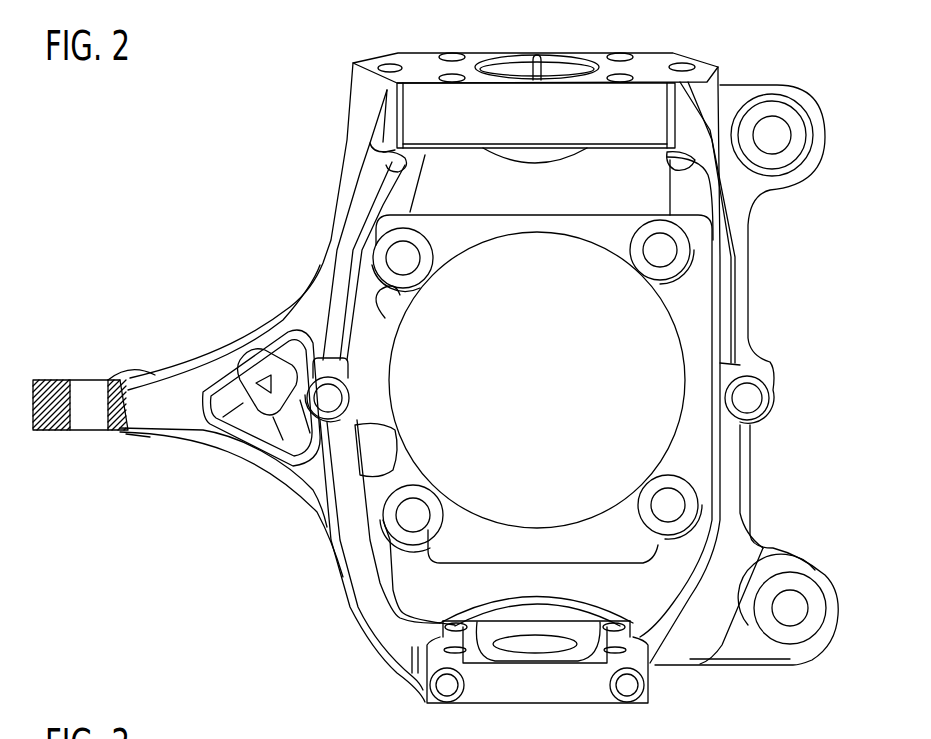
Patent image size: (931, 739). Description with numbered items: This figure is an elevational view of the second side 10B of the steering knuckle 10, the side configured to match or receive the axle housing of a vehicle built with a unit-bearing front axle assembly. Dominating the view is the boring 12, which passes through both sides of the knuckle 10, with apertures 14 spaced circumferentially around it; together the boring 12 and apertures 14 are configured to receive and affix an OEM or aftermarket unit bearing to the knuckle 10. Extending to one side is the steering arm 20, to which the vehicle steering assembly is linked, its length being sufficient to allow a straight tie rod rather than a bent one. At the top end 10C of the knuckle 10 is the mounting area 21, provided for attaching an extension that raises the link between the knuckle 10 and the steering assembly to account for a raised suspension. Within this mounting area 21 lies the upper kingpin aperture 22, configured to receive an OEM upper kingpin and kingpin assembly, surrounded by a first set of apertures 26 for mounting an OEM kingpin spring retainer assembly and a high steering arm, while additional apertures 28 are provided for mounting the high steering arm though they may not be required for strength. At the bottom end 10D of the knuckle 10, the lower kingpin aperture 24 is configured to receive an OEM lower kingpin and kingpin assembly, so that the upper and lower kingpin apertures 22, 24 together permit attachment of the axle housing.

The steering knuckle 10 is at (479, 377).
The second side 10B is at (728, 512).
The top end 10C is at (695, 62).
The bottom end 10D is at (600, 703).
The boring 12 is at (551, 392).
The apertures 14 is at (405, 260).
The steering arm 20 is at (147, 368).
The mounting area 21 is at (672, 66).
The upper kingpin aperture 22 is at (560, 62).
The lower kingpin aperture 24 is at (537, 648).
The first set of apertures 26 is at (452, 56).
The additional apertures 28 is at (390, 66).